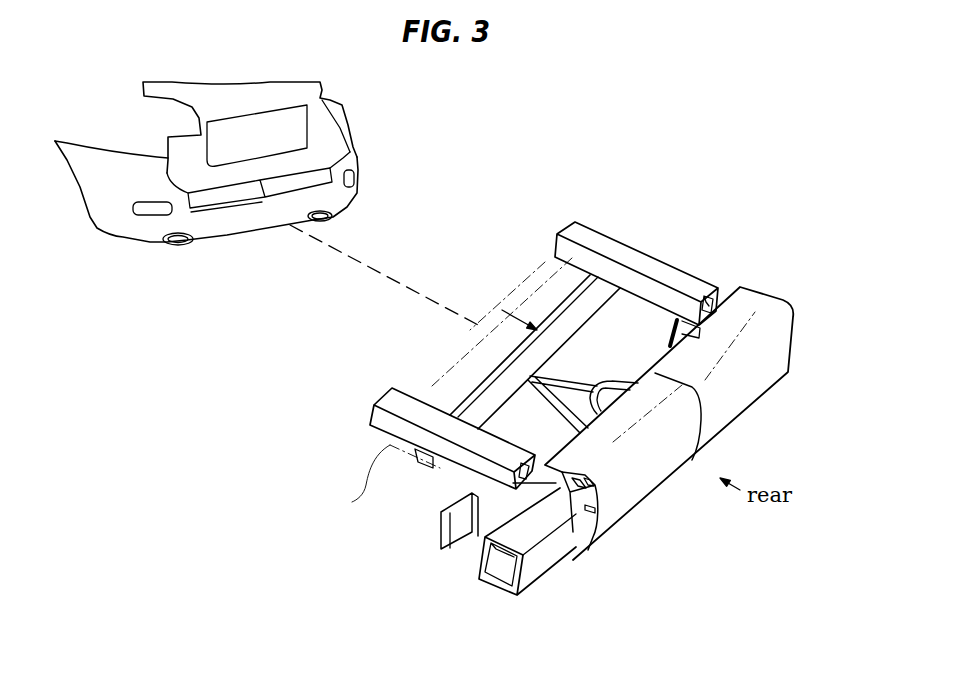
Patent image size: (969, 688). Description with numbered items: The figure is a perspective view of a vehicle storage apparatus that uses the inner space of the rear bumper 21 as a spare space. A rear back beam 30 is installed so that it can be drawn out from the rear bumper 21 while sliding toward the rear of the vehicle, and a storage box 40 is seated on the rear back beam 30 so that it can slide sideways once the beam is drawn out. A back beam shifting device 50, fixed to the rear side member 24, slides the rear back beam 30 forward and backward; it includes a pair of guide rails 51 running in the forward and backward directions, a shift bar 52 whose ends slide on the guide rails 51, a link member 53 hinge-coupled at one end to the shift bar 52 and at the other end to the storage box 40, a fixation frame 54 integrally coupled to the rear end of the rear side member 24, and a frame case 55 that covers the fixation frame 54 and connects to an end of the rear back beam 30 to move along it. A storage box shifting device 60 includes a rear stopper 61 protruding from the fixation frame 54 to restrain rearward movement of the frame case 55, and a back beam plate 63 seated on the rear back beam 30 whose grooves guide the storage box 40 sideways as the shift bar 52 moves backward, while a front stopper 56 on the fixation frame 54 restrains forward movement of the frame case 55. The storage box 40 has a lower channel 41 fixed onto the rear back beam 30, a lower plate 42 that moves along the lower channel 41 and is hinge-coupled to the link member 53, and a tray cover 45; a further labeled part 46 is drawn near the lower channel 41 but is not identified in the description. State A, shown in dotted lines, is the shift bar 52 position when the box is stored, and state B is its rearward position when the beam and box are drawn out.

The rear bumper 21 is at (211, 213).
The rear side member 24 is at (643, 327).
The rear back beam 30 is at (531, 571).
The storage box 40 is at (745, 432).
The lower channel 41 is at (596, 541).
The lower plate 42 is at (513, 483).
The tray cover 45 is at (257, 203).
The fastening hole 46 is at (578, 495).
The back beam shifting device 50 is at (502, 315).
The guide rail 51 is at (602, 240).
The shift bar 52 is at (563, 317).
The link member 53 is at (560, 378).
The fixation frame 54 is at (683, 312).
The frame case 55 is at (738, 290).
The front stopper 56 is at (437, 537).
The storage box shifting device 60 is at (668, 376).
The rear stopper 61 is at (498, 573).
The back beam plate 63 is at (617, 395).
The state A is at (438, 380).
The state B is at (620, 325).